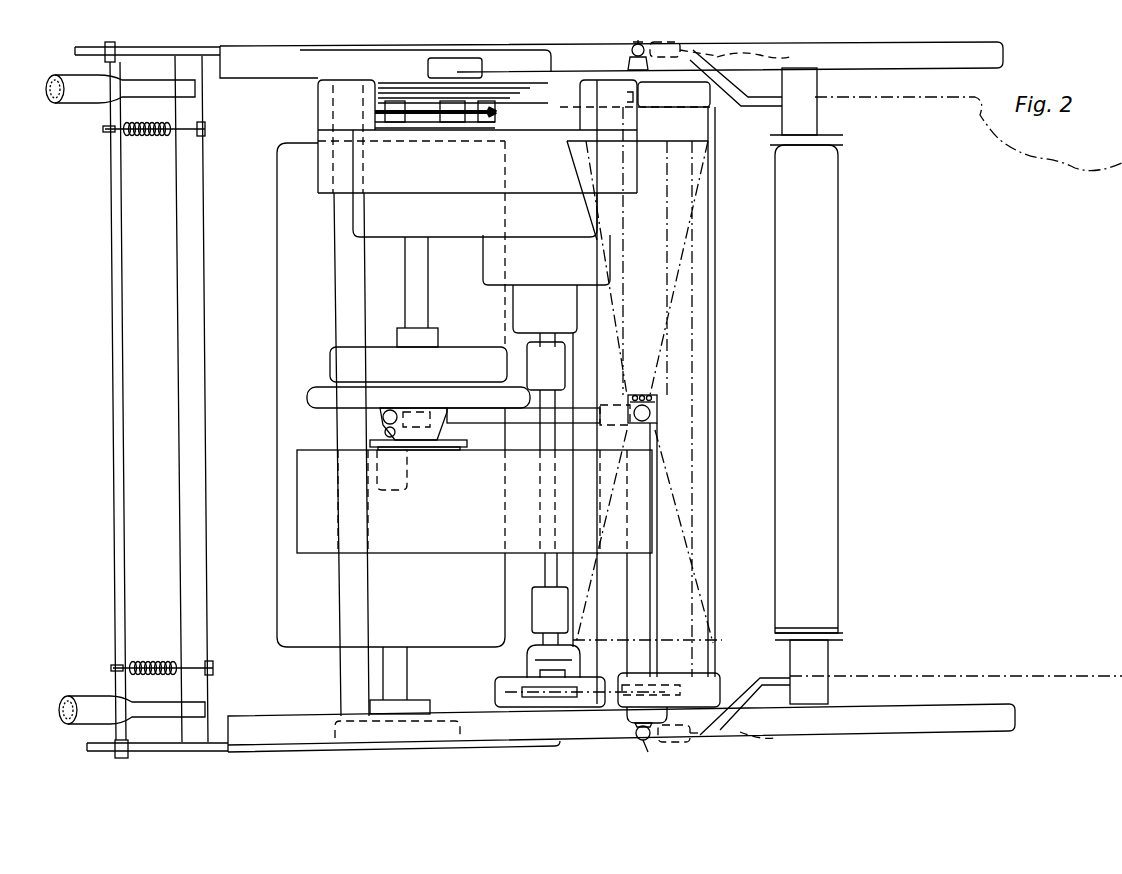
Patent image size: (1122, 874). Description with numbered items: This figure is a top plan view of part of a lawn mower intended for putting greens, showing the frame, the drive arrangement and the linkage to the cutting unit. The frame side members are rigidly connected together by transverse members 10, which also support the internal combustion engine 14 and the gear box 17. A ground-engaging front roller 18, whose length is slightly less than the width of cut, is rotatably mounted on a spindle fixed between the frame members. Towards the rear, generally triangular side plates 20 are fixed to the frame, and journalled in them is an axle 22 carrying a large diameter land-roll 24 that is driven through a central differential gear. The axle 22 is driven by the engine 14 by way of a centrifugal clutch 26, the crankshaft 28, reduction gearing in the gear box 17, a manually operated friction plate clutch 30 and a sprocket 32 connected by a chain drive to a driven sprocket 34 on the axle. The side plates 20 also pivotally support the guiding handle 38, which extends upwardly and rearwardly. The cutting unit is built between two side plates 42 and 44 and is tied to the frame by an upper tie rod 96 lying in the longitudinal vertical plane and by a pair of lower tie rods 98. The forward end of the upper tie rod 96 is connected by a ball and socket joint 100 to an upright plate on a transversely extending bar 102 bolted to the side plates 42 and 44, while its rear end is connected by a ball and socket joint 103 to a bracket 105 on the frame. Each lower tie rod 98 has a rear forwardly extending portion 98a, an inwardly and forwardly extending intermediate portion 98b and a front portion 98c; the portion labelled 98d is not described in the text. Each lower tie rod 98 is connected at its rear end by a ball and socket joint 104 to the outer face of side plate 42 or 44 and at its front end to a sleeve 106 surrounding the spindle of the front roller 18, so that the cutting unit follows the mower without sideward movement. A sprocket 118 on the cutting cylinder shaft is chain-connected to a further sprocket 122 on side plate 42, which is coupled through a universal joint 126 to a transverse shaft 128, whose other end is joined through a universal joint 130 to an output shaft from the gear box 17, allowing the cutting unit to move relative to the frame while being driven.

The transverse members 10 is at (352, 668).
The internal combustion engine 14 is at (307, 523).
The gear box 17 is at (370, 210).
The ground-engaging front roller 18 is at (812, 200).
The side plates 20 is at (267, 57).
The axle 22 is at (395, 682).
The land-roll 24 is at (298, 607).
The centrifugal clutch 26 is at (377, 358).
The crankshaft 28 is at (418, 265).
The manually operated friction plate clutch 30 is at (344, 106).
The sprocket 32 is at (457, 115).
The driven sprocket 34 is at (415, 115).
The guiding handle 38 is at (83, 90).
The side plate 42 is at (512, 702).
The side plate 44 is at (550, 102).
The upper tie rod 96 is at (475, 415).
The lower tie rods 98 is at (747, 95).
The rear forwardly extending portion 98a is at (700, 733).
The intermediate portion 98b is at (760, 753).
The front portion 98c is at (763, 102).
The conduit branch 98d is at (692, 104).
The ball and socket joint 100 is at (650, 410).
The transversely extending bar 102 is at (640, 273).
The ball and socket joint 103 is at (387, 415).
The ball and socket joint 104 is at (627, 53).
The bracket 105 is at (397, 487).
The sleeve 106 is at (800, 117).
The sprocket 118 is at (623, 697).
The further sprocket 122 is at (570, 707).
The universal joint 126 is at (540, 612).
The transverse shaft 128 is at (543, 570).
The universal joint 130 is at (543, 358).